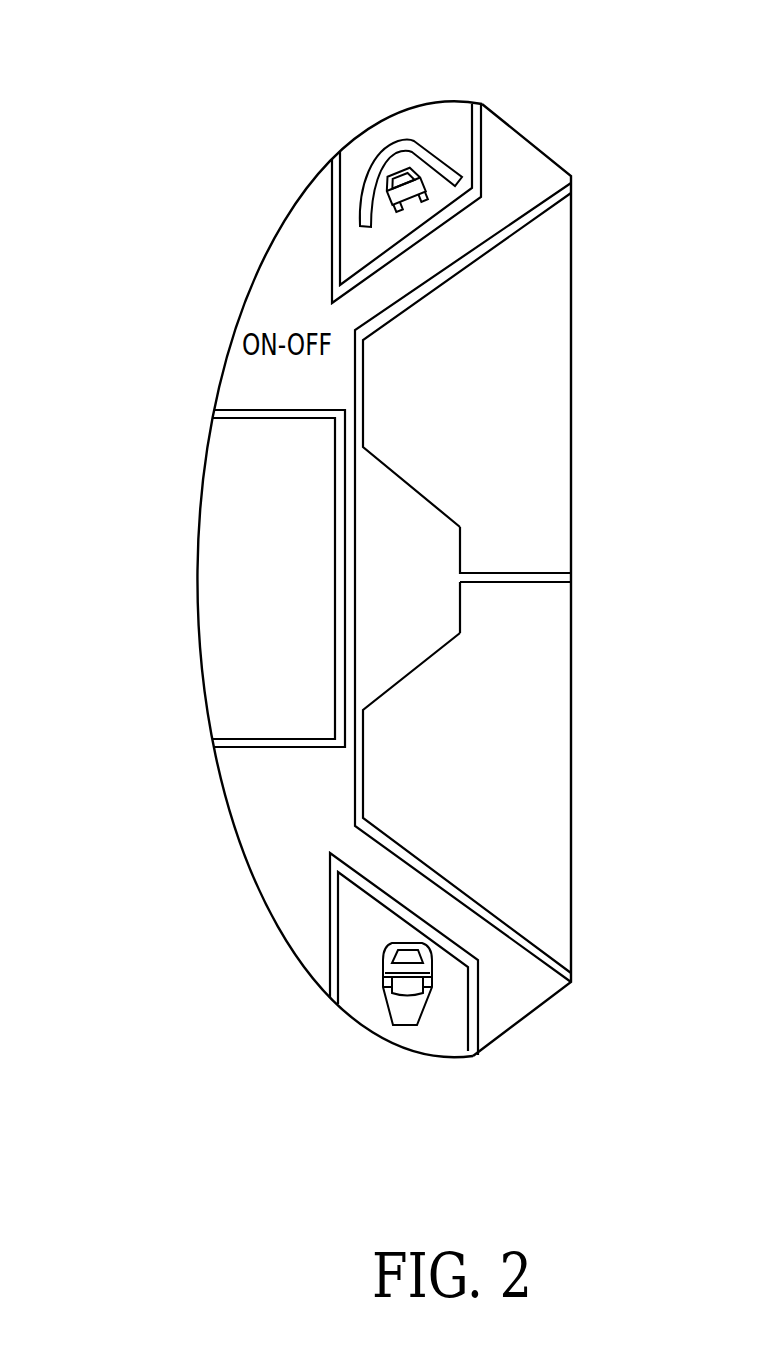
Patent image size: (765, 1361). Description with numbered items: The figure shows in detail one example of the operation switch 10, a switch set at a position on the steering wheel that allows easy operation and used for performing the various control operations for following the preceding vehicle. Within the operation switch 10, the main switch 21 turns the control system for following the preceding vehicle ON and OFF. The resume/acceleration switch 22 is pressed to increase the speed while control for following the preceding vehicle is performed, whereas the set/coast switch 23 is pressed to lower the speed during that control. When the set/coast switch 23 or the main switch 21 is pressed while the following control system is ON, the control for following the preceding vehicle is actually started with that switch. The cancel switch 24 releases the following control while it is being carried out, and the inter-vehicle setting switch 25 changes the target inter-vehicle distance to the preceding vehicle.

The operation switch 10 is at (90, 57).
The main switch 21 is at (200, 578).
The resume/acceleration switch 22 is at (562, 344).
The set/coast switch 23 is at (562, 818).
The cancel switch 24 is at (453, 552).
The inter-vehicle setting switch 25 is at (398, 1034).